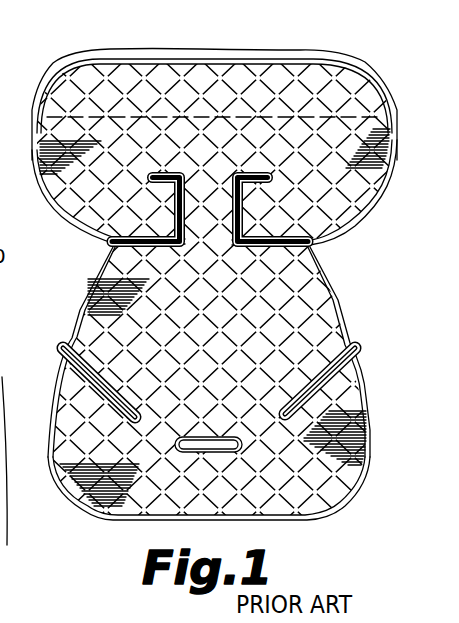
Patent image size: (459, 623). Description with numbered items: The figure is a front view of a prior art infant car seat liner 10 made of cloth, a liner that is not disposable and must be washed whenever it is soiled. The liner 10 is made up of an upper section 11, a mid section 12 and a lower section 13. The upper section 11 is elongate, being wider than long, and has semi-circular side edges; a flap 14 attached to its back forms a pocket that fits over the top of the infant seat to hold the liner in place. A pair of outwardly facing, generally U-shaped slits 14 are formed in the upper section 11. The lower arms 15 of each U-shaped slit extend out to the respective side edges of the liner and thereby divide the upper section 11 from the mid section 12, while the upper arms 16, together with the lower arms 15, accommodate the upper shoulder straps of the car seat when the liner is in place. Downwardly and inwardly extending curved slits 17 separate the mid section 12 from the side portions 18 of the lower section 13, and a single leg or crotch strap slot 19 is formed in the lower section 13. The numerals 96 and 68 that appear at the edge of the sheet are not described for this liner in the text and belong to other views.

The liner 10 is at (290, 43).
The upper section 11 is at (37, 200).
The mid section 12 is at (73, 310).
The lower section 13 is at (90, 518).
The U-shaped slits 14 is at (177, 50).
The lower arms 15 is at (143, 248).
The upper arms 16 is at (165, 172).
The curved slits 17 is at (107, 372).
The side portions 18 is at (83, 426).
The crotch strap slot 19 is at (212, 455).
The adjacent figure numeral 96 is at (11, 290).
The adjacent figure numeral 68 is at (12, 563).